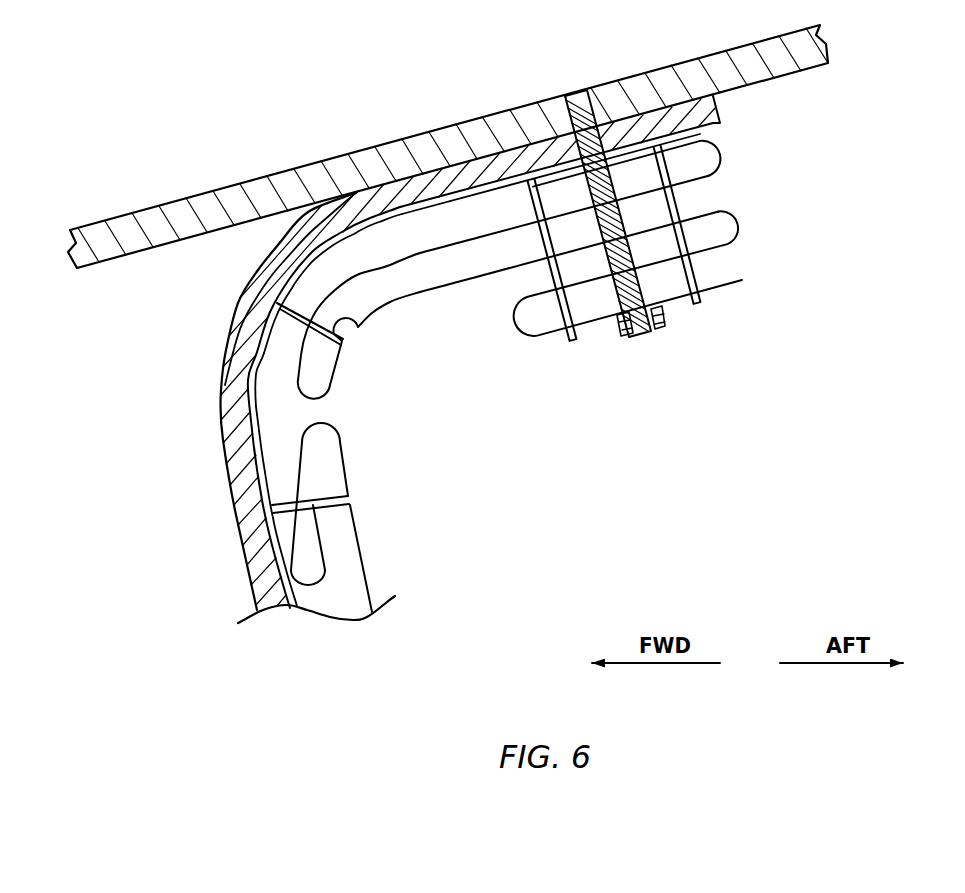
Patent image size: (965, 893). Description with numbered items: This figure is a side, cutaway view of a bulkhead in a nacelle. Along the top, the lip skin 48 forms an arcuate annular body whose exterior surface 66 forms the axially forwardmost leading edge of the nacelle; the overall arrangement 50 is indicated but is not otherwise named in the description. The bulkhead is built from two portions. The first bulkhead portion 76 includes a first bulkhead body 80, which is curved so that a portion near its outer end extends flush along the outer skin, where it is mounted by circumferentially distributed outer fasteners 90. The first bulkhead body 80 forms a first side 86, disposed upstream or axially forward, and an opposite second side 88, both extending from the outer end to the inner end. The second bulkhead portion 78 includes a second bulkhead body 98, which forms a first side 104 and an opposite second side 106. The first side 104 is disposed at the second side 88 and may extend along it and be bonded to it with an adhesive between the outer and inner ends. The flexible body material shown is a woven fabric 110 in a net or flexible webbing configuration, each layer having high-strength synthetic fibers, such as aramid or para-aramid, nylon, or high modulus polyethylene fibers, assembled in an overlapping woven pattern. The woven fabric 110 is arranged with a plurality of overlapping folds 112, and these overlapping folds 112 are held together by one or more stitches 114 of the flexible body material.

The lip skin 48 is at (398, 150).
The aircraft structure assembly 50 is at (860, 163).
The exterior surface 66 is at (213, 191).
The first bulkhead portion 76 is at (190, 507).
The second bulkhead portion 78 is at (489, 436).
The first bulkhead body 80 is at (226, 380).
The first side 86 is at (230, 332).
The second side 88 is at (262, 424).
The outer fasteners 90 is at (603, 100).
The second bulkhead body 98 is at (394, 319).
The first side 104 is at (270, 540).
The second side 106 is at (383, 560).
The woven fabric 110 is at (764, 250).
The overlapping folds 112 is at (752, 207).
The stitches 114 is at (360, 330).